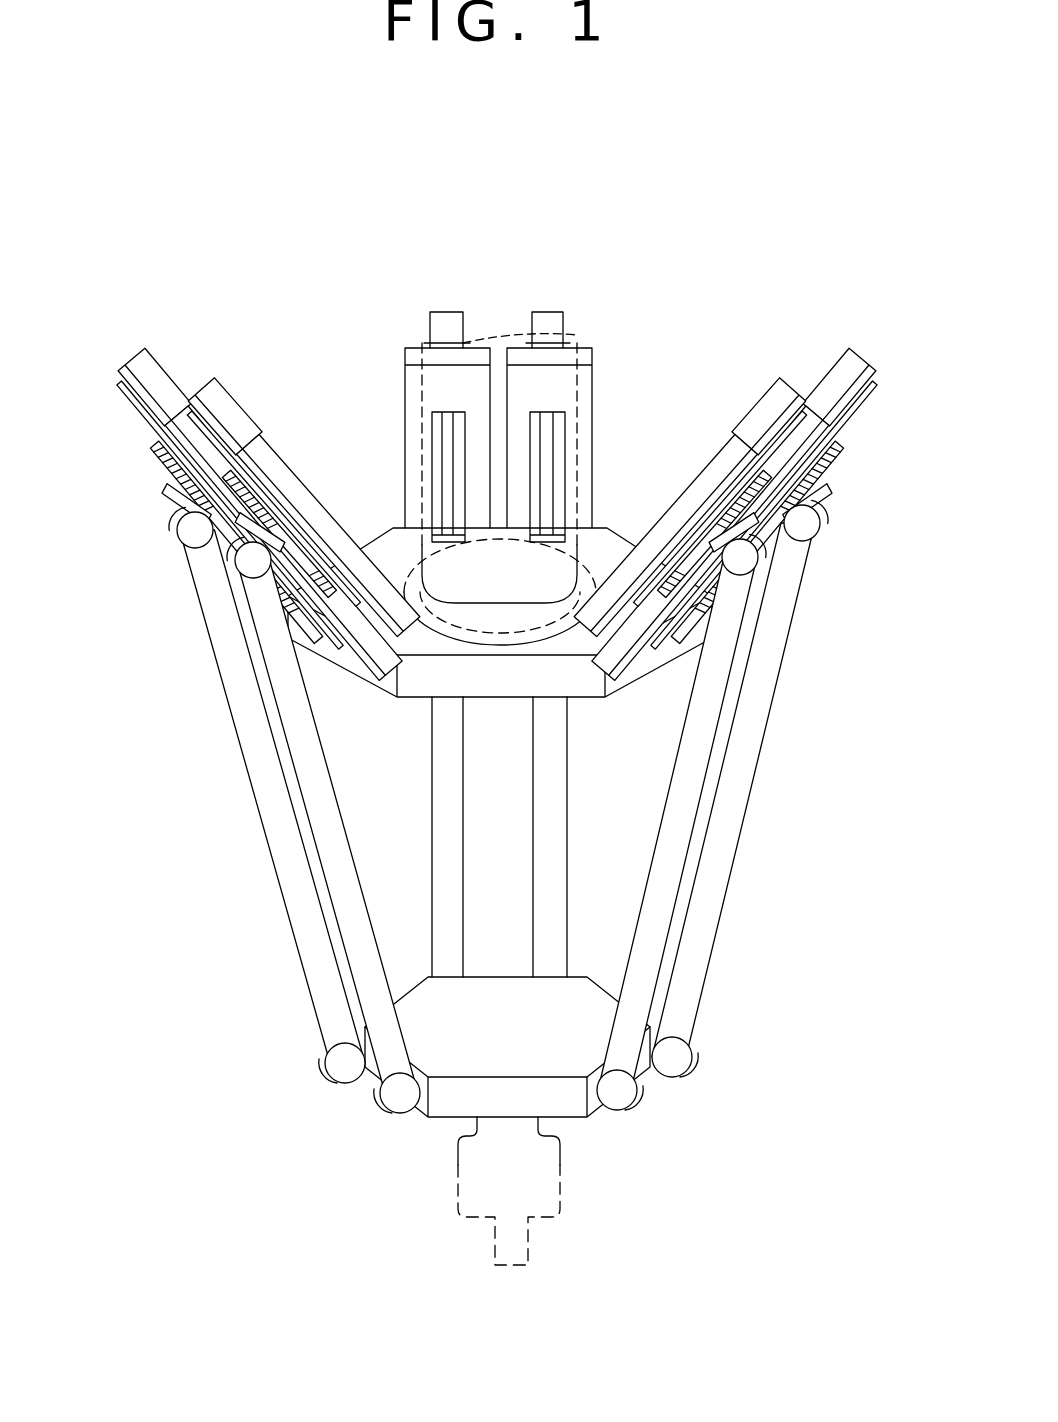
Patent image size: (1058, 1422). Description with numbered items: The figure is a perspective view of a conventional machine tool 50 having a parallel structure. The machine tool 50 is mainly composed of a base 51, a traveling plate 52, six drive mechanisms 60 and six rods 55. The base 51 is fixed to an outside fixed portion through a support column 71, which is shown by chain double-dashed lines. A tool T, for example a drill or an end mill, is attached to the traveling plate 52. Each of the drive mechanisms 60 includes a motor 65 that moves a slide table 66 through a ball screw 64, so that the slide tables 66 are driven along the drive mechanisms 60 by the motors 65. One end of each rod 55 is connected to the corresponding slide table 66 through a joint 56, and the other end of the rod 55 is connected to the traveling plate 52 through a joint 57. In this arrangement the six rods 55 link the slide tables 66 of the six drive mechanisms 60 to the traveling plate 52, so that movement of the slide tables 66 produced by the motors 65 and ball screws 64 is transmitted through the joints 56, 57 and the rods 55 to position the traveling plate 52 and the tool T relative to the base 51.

The machine tool 50 is at (307, 1174).
The base 51 is at (377, 560).
The traveling plate 52 is at (556, 1056).
The rods 55 is at (322, 817).
The joint 56 is at (257, 563).
The joint 57 is at (405, 1094).
The drive mechanisms 60 is at (124, 313).
The ball screw 64 is at (270, 460).
The motor 65 is at (538, 332).
The slide table 66 is at (180, 502).
The support column 71 is at (578, 335).
The tool T is at (503, 1232).